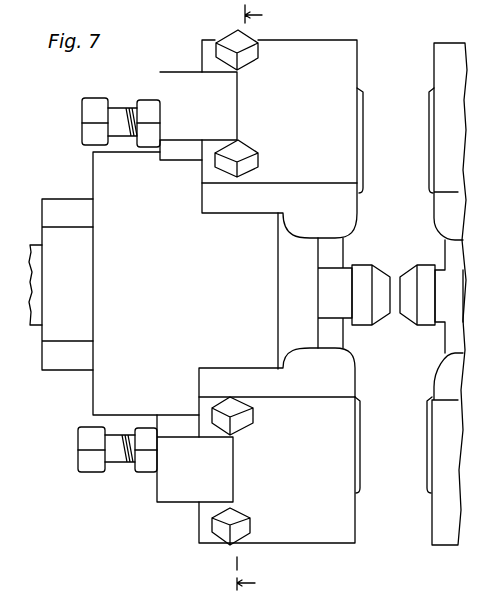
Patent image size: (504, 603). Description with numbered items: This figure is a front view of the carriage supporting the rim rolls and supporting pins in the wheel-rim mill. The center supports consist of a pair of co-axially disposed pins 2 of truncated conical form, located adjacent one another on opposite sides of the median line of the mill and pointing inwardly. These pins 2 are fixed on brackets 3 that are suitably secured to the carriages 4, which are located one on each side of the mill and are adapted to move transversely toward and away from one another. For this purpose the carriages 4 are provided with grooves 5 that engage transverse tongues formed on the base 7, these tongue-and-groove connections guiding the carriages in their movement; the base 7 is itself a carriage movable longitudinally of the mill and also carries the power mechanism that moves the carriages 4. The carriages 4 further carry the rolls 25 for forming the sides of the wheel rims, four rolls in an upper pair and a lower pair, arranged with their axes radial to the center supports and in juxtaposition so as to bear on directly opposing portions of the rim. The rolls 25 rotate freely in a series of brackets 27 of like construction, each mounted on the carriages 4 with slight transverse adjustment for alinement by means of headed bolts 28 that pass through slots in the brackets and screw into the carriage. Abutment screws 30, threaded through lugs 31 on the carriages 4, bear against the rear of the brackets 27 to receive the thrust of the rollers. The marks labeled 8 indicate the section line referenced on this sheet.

The pins 2 is at (408, 270).
The brackets 3 is at (312, 328).
The carriages 4 is at (105, 382).
The grooves 5 is at (53, 203).
The base 7 is at (48, 327).
The section line 8 is at (256, 300).
The rolls 25 is at (428, 163).
The brackets 27 is at (438, 62).
The headed bolts 28 is at (253, 63).
The abutment screws 30 is at (120, 112).
The lugs 31 is at (197, 287).